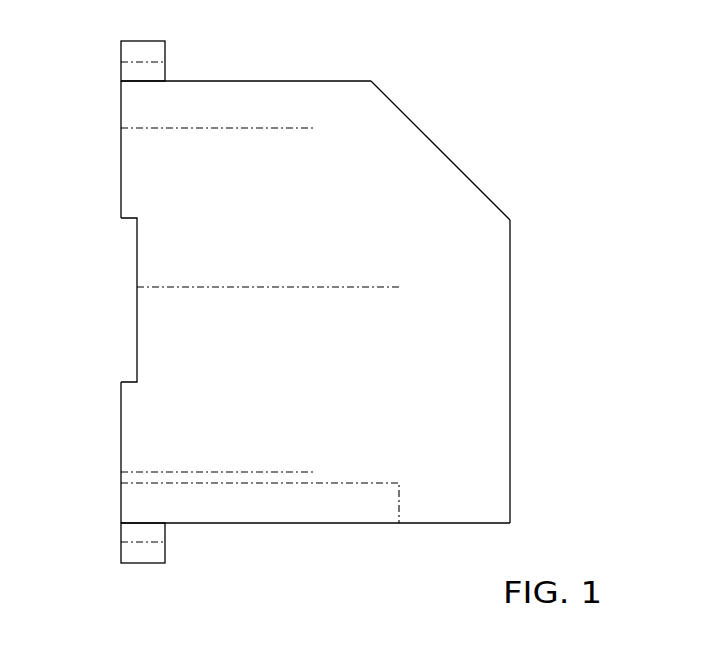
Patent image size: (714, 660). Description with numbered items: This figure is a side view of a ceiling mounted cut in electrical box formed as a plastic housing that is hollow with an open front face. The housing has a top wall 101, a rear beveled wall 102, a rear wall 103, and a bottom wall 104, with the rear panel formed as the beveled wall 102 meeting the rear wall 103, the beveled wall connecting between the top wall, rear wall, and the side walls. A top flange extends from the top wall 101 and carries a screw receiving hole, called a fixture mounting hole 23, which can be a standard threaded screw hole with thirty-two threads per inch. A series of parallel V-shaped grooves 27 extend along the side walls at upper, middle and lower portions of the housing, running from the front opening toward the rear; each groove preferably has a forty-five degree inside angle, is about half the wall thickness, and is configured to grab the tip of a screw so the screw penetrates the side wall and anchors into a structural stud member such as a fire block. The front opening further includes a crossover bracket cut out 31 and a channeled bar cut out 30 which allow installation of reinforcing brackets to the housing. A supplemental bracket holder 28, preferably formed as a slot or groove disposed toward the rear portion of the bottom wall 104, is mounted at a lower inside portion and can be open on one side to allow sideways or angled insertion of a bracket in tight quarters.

The fixture mounting hole 23 is at (132, 55).
The V-shaped groove 27 is at (148, 128).
The supplemental bracket holder 28 is at (154, 508).
The channeled bar cut out 30 is at (162, 255).
The crossover bracket cut out 31 is at (137, 287).
The top wall 101 is at (348, 78).
The rear beveled wall 102 is at (444, 155).
The rear wall 103 is at (516, 418).
The bottom wall 104 is at (411, 518).